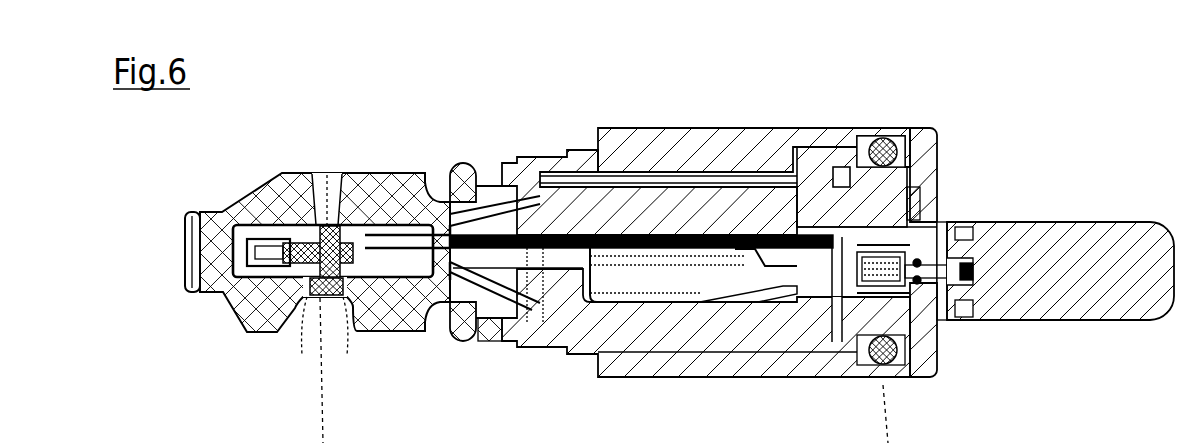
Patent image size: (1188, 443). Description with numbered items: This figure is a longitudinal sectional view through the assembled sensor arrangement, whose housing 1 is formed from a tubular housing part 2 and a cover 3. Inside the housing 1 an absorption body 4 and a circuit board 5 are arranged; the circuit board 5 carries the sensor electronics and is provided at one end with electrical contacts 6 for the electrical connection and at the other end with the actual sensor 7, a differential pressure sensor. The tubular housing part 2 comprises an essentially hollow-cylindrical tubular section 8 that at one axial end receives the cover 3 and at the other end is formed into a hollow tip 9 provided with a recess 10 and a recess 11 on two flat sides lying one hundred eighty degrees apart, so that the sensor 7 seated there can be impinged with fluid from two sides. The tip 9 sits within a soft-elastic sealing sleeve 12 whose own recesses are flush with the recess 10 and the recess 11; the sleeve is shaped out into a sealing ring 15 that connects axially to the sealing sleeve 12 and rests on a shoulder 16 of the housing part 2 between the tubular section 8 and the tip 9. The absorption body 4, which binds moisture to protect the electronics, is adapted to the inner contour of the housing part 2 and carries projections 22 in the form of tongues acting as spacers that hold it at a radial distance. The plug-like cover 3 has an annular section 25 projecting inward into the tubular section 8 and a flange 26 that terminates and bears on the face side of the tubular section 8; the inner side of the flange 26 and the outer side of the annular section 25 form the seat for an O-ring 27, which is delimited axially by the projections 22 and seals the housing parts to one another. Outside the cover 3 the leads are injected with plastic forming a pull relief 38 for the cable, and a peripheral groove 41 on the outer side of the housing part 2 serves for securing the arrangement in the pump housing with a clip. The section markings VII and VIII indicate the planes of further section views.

The housing 1 is at (730, 124).
The tubular housing part 2 is at (575, 147).
The cover 3 is at (942, 198).
The absorption body 4 is at (694, 340).
The circuit board 5 is at (640, 255).
The electrical contacts 6 is at (845, 290).
The sensor 7 is at (332, 300).
The tubular section 8 is at (740, 343).
The tip 9 is at (420, 290).
The recess 10 is at (350, 232).
The recess 11 is at (305, 300).
The sealing sleeve 12 is at (250, 188).
The sealing ring 15 is at (462, 182).
The shoulder 16 is at (398, 215).
The projections 22 is at (855, 150).
The annular section 25 is at (907, 160).
The flange 26 is at (925, 345).
The O-ring 27 is at (885, 365).
The pull relief 38 is at (1080, 240).
The peripheral groove 41 is at (505, 348).
The section line VII is at (952, 245).
The section line VIII is at (282, 192).